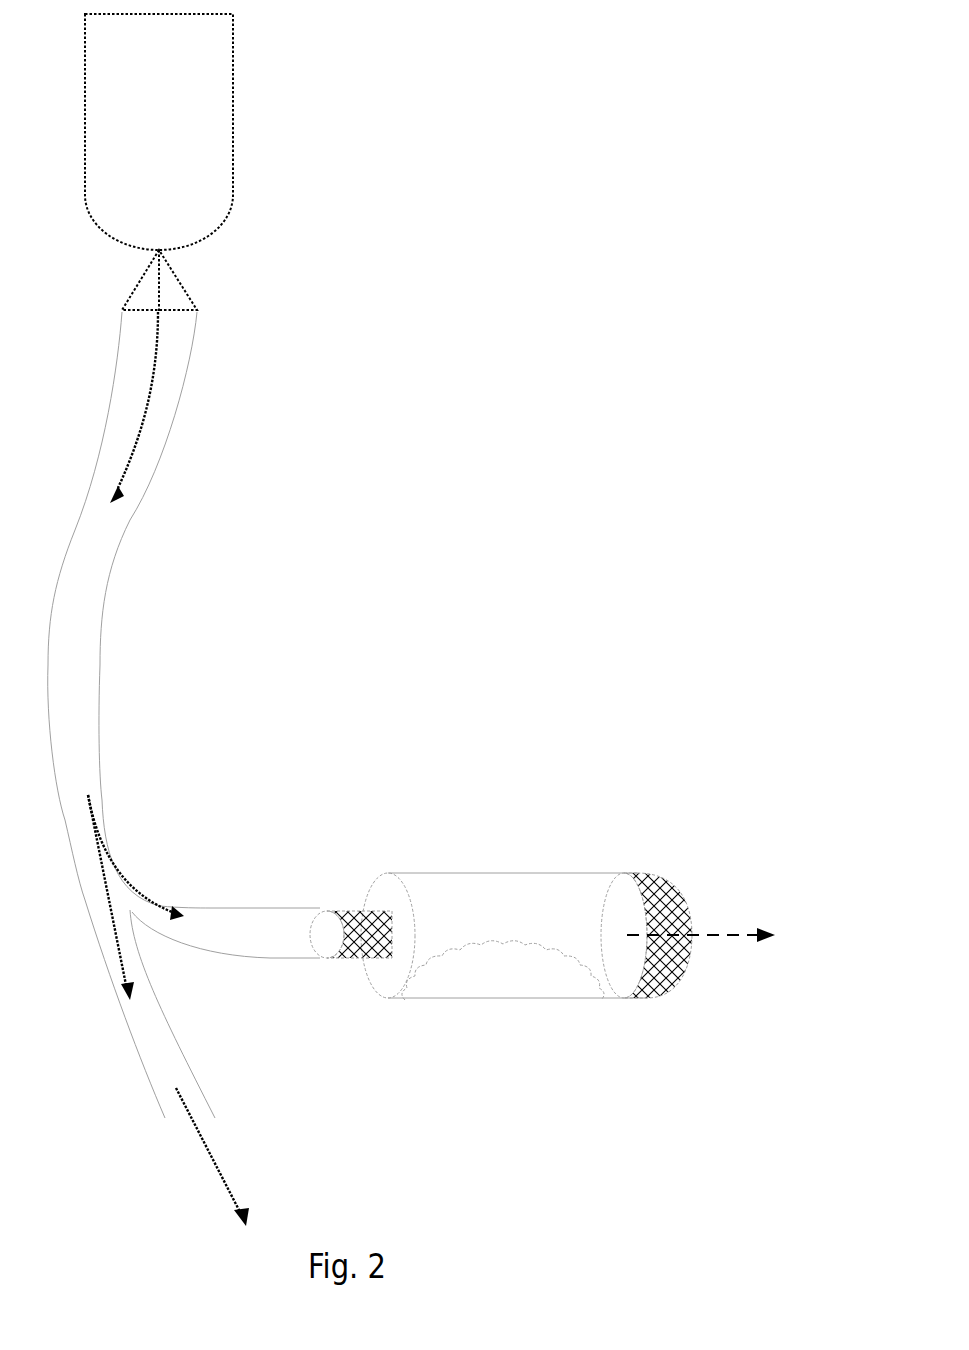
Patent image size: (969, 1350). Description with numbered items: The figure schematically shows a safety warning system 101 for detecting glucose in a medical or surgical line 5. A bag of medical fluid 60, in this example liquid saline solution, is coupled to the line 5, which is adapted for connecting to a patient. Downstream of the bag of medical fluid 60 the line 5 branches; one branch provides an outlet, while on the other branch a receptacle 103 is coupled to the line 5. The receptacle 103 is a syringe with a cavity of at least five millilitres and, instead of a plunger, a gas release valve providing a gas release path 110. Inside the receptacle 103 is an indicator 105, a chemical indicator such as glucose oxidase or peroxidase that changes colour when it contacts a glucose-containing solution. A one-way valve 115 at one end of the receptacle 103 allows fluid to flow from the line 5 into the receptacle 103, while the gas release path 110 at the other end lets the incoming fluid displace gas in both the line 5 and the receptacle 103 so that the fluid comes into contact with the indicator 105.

The bag of medical fluid 60 is at (233, 162).
The medical or surgical line 5 is at (75, 591).
The safety warning system 101 is at (537, 795).
The receptacle 103 is at (503, 873).
The one-way valve 115 is at (368, 996).
The indicator 105 is at (505, 993).
The gas release path 110 is at (678, 990).